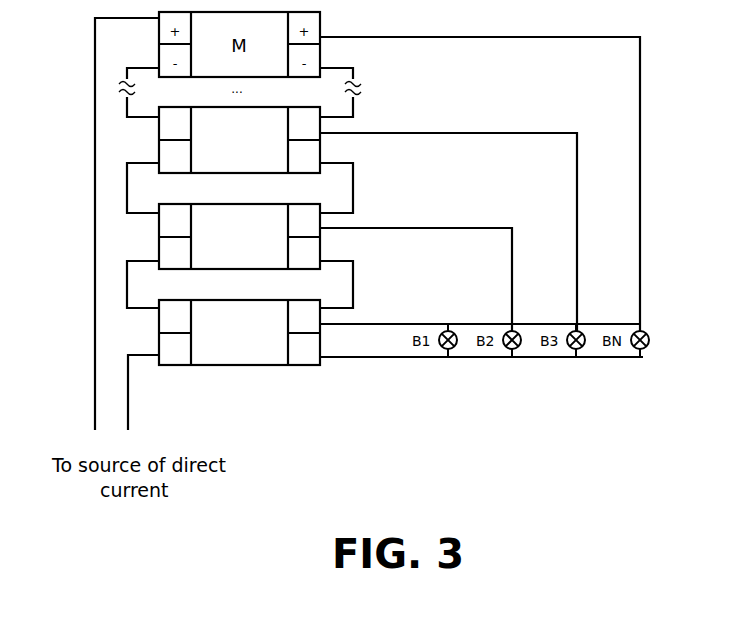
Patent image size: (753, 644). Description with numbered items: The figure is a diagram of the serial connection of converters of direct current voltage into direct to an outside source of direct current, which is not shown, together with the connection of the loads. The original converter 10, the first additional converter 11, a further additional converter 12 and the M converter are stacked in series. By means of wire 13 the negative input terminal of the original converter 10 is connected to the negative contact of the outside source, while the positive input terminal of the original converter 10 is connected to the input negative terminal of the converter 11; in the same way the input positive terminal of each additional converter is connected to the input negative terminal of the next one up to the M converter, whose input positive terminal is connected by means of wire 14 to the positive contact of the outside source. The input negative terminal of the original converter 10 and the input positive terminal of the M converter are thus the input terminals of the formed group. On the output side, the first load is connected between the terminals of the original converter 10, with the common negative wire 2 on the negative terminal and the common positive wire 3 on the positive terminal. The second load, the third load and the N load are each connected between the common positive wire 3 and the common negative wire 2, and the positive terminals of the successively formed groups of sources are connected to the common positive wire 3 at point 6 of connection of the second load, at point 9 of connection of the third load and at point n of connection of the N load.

The common negative wire 2 is at (388, 359).
The common positive wire 3 is at (388, 322).
The point of connection of second load B2 6 is at (515, 320).
The point of connection of third load B3 9 is at (580, 320).
The point of connection of N load BN n is at (644, 320).
The original converter of direct current voltage into direct 10 is at (239, 332).
The first additional converter of direct current voltage into direct 11 is at (240, 256).
The additional converter of direct current voltage into direct 12 is at (240, 160).
The wire 13 is at (131, 387).
The wire 14 is at (94, 392).